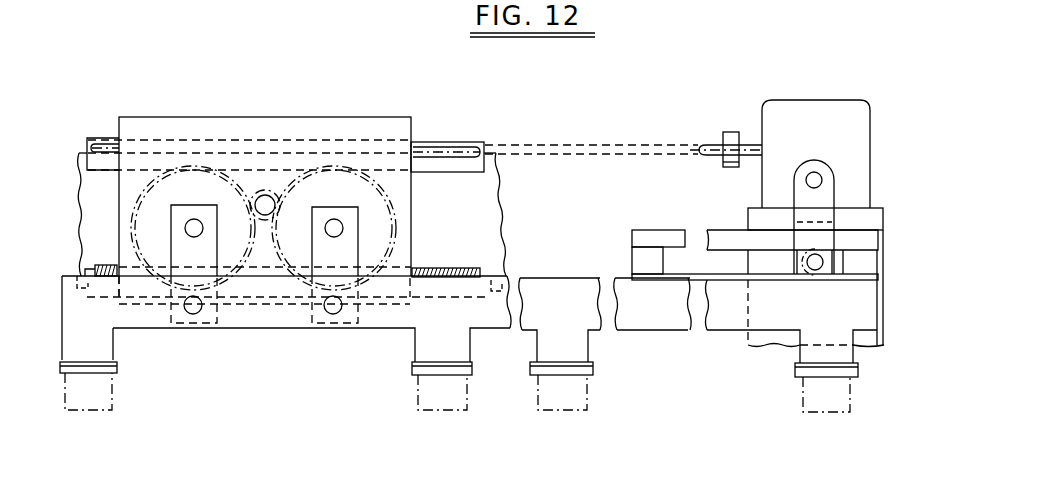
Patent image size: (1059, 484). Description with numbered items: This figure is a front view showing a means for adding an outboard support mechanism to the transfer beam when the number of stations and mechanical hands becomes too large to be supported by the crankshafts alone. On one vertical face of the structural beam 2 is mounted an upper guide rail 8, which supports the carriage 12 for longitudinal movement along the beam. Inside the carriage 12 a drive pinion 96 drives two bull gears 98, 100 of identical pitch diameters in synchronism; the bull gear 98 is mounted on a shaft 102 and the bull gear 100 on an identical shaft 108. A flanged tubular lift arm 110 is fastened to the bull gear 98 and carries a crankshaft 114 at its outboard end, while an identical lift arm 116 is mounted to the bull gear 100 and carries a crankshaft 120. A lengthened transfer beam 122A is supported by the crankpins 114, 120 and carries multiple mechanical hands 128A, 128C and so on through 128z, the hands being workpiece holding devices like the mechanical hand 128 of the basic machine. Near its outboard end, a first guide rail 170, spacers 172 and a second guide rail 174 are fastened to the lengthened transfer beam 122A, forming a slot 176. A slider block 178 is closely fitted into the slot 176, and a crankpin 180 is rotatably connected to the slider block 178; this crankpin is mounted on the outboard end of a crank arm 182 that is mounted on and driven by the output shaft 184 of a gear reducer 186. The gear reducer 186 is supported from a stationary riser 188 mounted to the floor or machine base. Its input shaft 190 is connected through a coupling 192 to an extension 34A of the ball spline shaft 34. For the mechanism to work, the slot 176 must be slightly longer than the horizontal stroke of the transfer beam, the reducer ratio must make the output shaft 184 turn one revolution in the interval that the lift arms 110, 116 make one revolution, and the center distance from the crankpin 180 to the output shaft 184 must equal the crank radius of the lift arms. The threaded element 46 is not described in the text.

The structural beam 2 is at (490, 242).
The upper guide rail 8 is at (470, 173).
The carriage 12 is at (302, 114).
The ball spline shaft 34 is at (448, 147).
The extension of the ball spline shaft 34A is at (707, 145).
The threaded sleeve 46 is at (480, 270).
The drive pinion 96 is at (265, 191).
The bull gear 98 is at (157, 173).
The bull gear 100 is at (347, 168).
The shaft 102 is at (195, 219).
The shaft 108 is at (343, 228).
The lift arm 110 is at (172, 256).
The crankshaft 114 is at (195, 314).
The lift arm 116 is at (310, 257).
The crankshaft 120 is at (325, 314).
The lengthened transfer beam 122A is at (390, 332).
The mechanical hand 128 is at (87, 420).
The mechanical hand 128A is at (455, 408).
The mechanical hand 128C is at (588, 403).
The mechanical hand 128z is at (800, 400).
The first guide rail 170 is at (632, 276).
The spacers 172 is at (632, 260).
The second guide rail 174 is at (643, 234).
The slot 176 is at (714, 245).
The slider block 178 is at (843, 263).
The crankpin 180 is at (815, 269).
The crank arm 182 is at (836, 192).
The output shaft 184 is at (822, 178).
The gear reducer 186 is at (777, 103).
The stationary riser 188 is at (871, 345).
The input shaft 190 is at (744, 146).
The coupling 192 is at (733, 167).